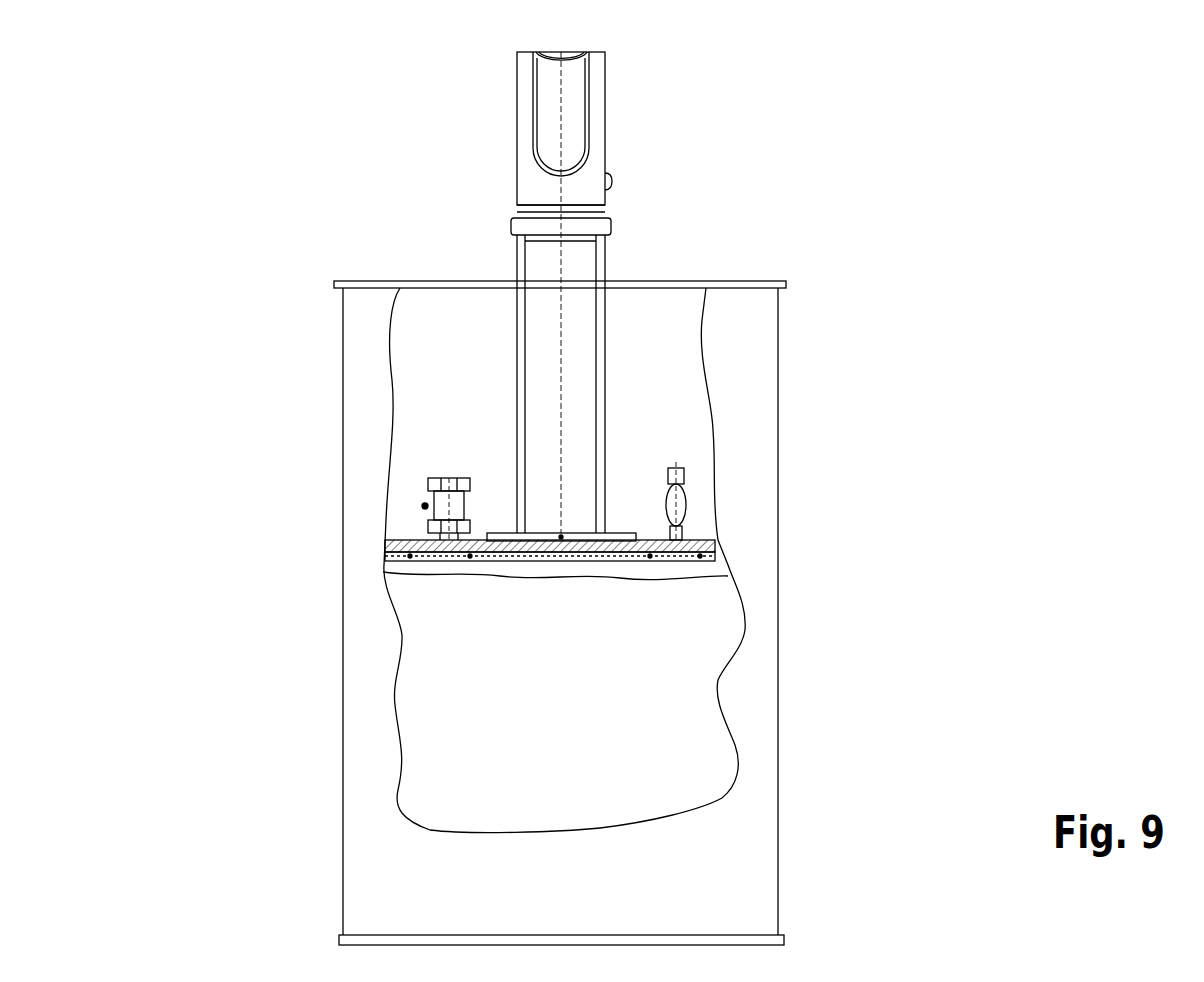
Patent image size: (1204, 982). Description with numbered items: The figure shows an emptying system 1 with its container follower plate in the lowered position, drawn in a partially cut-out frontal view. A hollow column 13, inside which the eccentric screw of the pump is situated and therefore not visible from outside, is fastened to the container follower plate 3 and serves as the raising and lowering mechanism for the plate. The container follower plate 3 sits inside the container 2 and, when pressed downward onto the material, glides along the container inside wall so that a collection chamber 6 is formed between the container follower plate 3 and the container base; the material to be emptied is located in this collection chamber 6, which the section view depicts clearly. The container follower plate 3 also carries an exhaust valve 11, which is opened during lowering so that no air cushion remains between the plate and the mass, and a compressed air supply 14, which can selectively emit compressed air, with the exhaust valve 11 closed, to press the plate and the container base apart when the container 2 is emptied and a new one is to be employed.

The emptying system 1 is at (922, 202).
The container 2 is at (769, 413).
The container follower plate 3 is at (721, 549).
The collection chamber 6 is at (646, 698).
The exhaust valve 11 is at (446, 510).
The hollow column 13 is at (579, 276).
The compressed air supply 14 is at (681, 496).